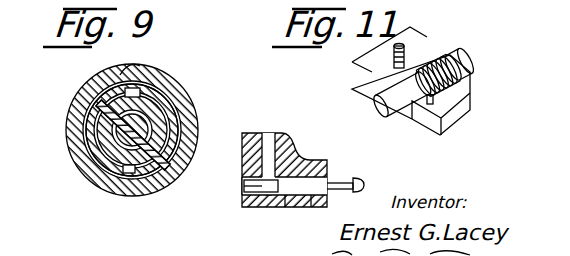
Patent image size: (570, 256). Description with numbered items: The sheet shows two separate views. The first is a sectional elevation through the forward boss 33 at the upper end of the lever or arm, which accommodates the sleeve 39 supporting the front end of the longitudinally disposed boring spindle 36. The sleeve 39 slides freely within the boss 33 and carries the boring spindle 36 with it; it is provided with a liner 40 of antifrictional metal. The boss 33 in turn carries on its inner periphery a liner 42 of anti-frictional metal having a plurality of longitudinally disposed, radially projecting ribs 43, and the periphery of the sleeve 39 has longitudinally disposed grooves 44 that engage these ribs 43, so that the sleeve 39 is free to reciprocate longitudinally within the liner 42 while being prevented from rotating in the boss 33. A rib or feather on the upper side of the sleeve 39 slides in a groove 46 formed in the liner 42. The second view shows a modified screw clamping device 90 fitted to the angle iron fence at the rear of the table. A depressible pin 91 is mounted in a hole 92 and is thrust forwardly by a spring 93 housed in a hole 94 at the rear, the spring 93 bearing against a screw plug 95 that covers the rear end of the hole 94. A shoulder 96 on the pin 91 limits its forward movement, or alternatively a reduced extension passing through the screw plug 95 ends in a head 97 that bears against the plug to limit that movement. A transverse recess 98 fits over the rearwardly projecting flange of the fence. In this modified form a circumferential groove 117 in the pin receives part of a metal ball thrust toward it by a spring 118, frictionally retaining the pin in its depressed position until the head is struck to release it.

In FIG. 9, the boss 33 is at (167, 90).
In FIG. 9, the boring spindle 36 is at (185, 95).
In FIG. 9, the sleeve 39 is at (100, 131).
In FIG. 9, the liner 40 is at (88, 160).
In FIG. 9, the liner 42 is at (72, 145).
In FIG. 9, the ribs 43 is at (100, 115).
In FIG. 9, the grooves 44 is at (107, 100).
In FIG. 9, the groove 46 is at (148, 80).
In FIG. 11, the screw clamping device 90 is at (302, 142).
In FIG. 11, the depressible pin 91 is at (248, 206).
In FIG. 11, the hole 92 is at (242, 197).
In FIG. 11, the spring 93 is at (445, 87).
In FIG. 11, the hole 94 is at (443, 90).
In FIG. 11, the screw plug 95 is at (448, 57).
In FIG. 11, the shoulder 96 is at (297, 207).
In FIG. 11, the head 97 is at (468, 58).
In FIG. 11, the transverse recess 98 is at (442, 125).
In FIG. 11, the circumferential groove 117 is at (404, 118).
In FIG. 11, the spring 118 is at (355, 77).